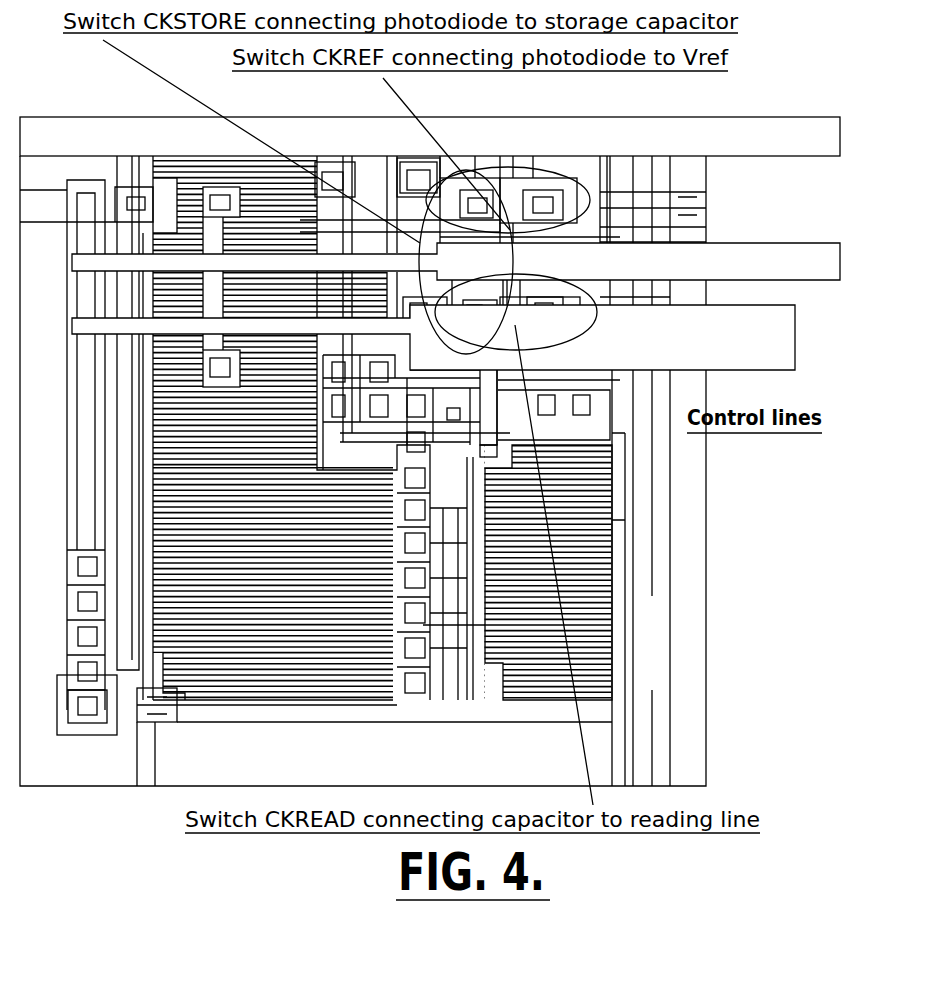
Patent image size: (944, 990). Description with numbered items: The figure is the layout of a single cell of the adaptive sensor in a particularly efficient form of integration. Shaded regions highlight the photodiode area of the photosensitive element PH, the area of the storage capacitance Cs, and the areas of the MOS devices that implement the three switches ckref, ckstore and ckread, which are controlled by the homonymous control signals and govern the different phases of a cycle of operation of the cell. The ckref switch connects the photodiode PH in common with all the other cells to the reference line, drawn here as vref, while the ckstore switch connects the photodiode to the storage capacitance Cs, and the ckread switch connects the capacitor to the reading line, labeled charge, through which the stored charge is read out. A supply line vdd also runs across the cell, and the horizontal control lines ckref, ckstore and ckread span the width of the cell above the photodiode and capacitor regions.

The photodiode sensor PH is at (268, 428).
The storage capacitance Cs is at (548, 572).
The supply line vdd is at (86, 445).
The charge line charge is at (650, 471).
The reference voltage line vref is at (686, 471).
The CKREF switch ckref is at (430, 136).
The CKSTORE switch ckstore is at (456, 261).
The CKREAD switch ckread is at (433, 337).